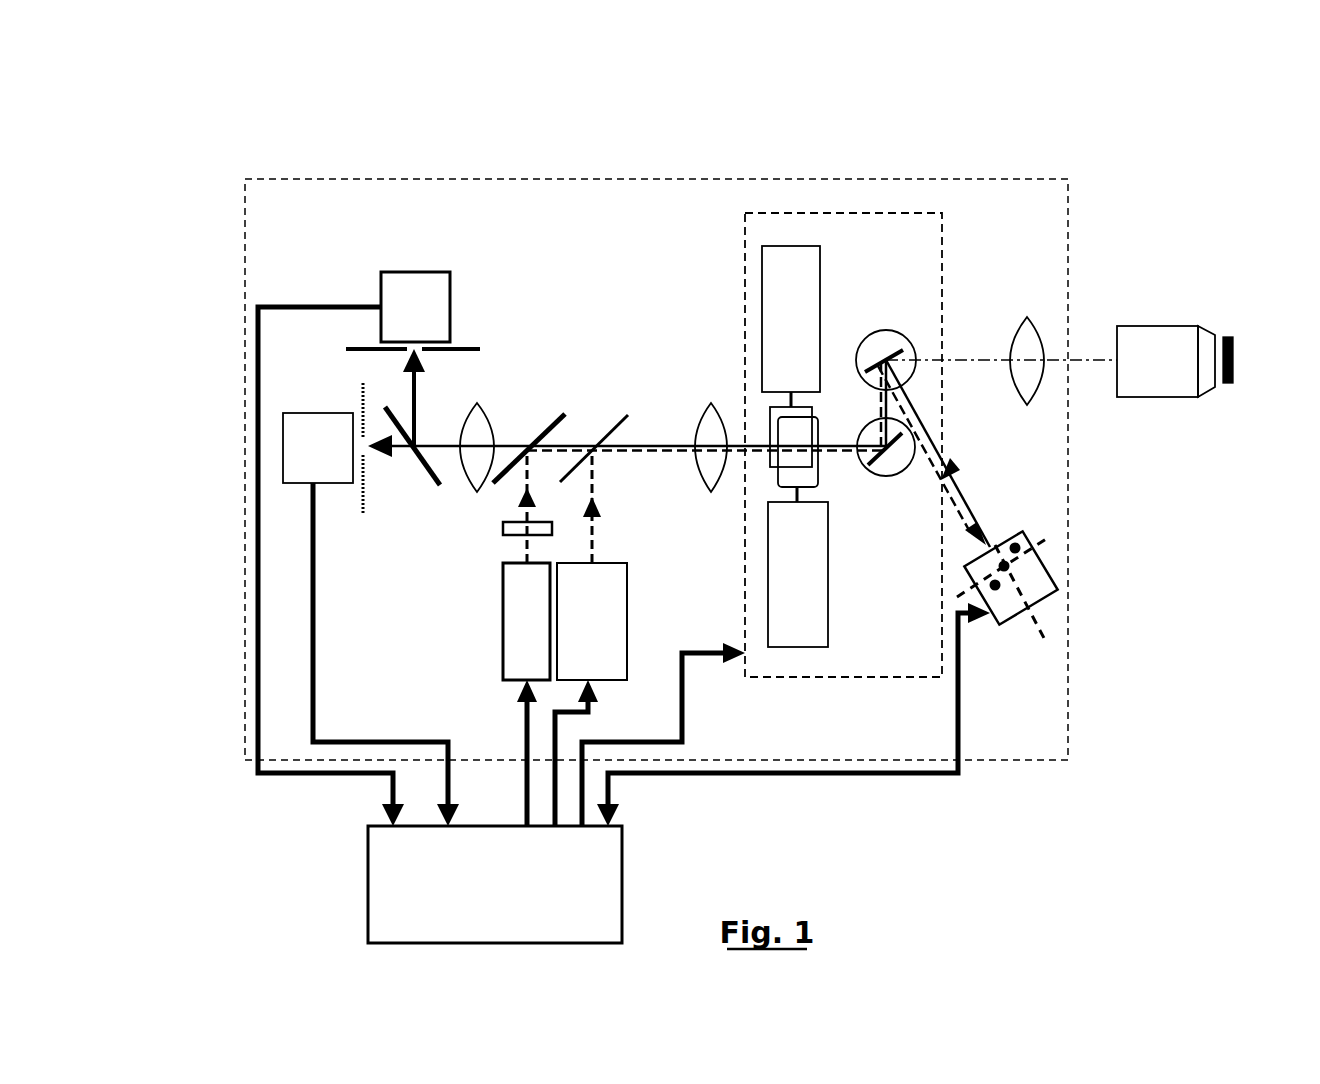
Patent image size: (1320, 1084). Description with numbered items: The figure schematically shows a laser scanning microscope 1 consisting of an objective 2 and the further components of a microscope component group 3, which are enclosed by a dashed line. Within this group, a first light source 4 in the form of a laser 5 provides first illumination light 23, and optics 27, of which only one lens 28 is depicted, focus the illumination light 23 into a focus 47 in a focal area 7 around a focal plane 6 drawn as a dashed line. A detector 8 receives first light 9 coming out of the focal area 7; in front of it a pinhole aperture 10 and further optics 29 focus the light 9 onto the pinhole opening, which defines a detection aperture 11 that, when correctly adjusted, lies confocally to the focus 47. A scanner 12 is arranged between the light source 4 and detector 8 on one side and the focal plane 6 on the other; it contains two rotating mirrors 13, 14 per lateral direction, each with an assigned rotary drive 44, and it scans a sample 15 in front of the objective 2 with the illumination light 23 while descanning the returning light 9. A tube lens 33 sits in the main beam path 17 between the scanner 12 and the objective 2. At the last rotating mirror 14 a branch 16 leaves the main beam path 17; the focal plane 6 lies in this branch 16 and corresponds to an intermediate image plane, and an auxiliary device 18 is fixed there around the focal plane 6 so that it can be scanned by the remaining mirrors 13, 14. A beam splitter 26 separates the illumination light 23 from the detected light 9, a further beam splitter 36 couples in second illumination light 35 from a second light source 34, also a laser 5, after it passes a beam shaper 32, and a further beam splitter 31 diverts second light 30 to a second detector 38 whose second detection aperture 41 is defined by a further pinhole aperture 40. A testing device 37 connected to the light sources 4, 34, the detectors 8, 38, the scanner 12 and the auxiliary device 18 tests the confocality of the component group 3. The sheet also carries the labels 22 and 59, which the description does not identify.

The laser scanning microscope 1 is at (1147, 117).
The objective 2 is at (1155, 325).
The microscope component group 3 is at (289, 166).
The first light source 4 is at (628, 607).
The laser 5 is at (458, 637).
The focal plane 6 is at (1027, 616).
The focal area 7 is at (973, 578).
The detector 8 is at (318, 408).
The first light 9 is at (399, 452).
The pinhole aperture 10 is at (362, 516).
The detection aperture 11 is at (363, 443).
The scanner 12 is at (750, 207).
The rotating mirror 13 is at (772, 412).
The rotating mirror 14 is at (868, 367).
The sample 15 is at (1235, 357).
The branch 16 is at (960, 512).
The main beam path 17 is at (983, 353).
The auxiliary device 18 is at (1015, 620).
The light beam 22 is at (972, 493).
The first illumination light 23 is at (595, 478).
The beam splitter 26 is at (627, 411).
The optics 27 is at (665, 401).
The lens 28 is at (700, 402).
The further optics 29 is at (491, 403).
The second light 30 is at (417, 393).
The further beam splitter 31 is at (427, 462).
The beam shaper 32 is at (503, 529).
The tube lens 33 is at (1023, 317).
The second light source 34 is at (503, 653).
The second illumination light 35 is at (527, 540).
The further beam splitter 36 is at (557, 411).
The testing device 37 is at (368, 872).
The second detector 38 is at (402, 270).
The further pinhole aperture 40 is at (362, 347).
The second detection aperture 41 is at (416, 346).
The rotary drive 44 is at (772, 310).
The focus 47 is at (1012, 567).
The light beam 59 is at (592, 563).